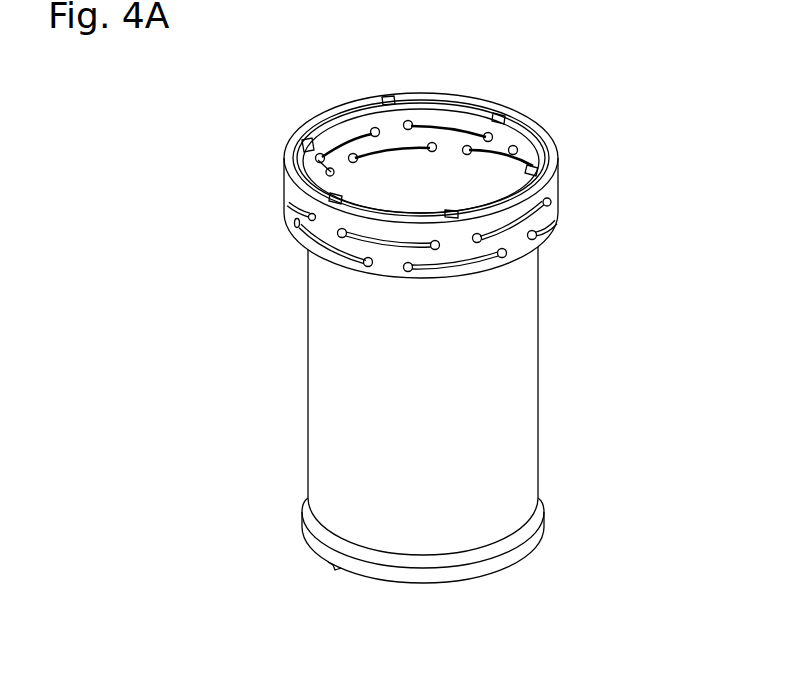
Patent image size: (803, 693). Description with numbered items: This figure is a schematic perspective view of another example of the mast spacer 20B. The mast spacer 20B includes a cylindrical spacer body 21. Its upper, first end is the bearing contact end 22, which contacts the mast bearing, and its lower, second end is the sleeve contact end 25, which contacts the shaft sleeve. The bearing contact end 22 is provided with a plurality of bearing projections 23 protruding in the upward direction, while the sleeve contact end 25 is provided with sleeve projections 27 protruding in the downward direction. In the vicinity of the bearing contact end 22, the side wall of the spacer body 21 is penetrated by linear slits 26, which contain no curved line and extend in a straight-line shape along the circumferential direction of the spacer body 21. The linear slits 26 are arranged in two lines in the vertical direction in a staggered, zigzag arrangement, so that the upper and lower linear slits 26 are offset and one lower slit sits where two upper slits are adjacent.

The mast spacer 20B is at (568, 152).
The cylindrical spacer body 21 is at (525, 350).
The bearing contact end 22 is at (287, 168).
The bearing projections 23 is at (388, 99).
The sleeve contact end 25 is at (305, 505).
The linear slits 26 is at (535, 248).
The sleeve projections 27 is at (333, 566).